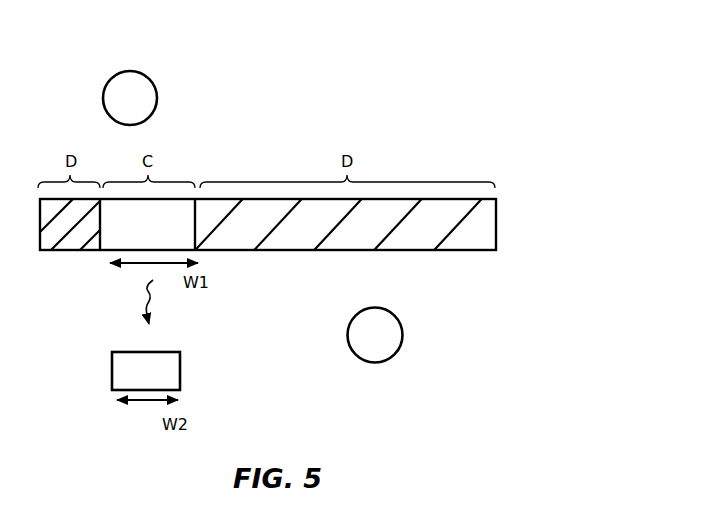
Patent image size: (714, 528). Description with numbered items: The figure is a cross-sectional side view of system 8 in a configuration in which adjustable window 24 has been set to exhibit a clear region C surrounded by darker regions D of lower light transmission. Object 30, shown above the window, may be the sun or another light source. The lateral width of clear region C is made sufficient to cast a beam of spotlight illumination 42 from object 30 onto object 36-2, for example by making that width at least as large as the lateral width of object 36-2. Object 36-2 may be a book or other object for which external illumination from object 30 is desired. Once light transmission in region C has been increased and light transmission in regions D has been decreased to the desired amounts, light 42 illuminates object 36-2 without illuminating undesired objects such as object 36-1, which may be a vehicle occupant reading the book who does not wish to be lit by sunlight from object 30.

The system 8 is at (548, 78).
The adjustable window 24 is at (517, 202).
The object 30 is at (143, 98).
The object 36-1 is at (388, 333).
The object 36-2 is at (118, 372).
The beam of spotlight illumination 42 is at (145, 315).